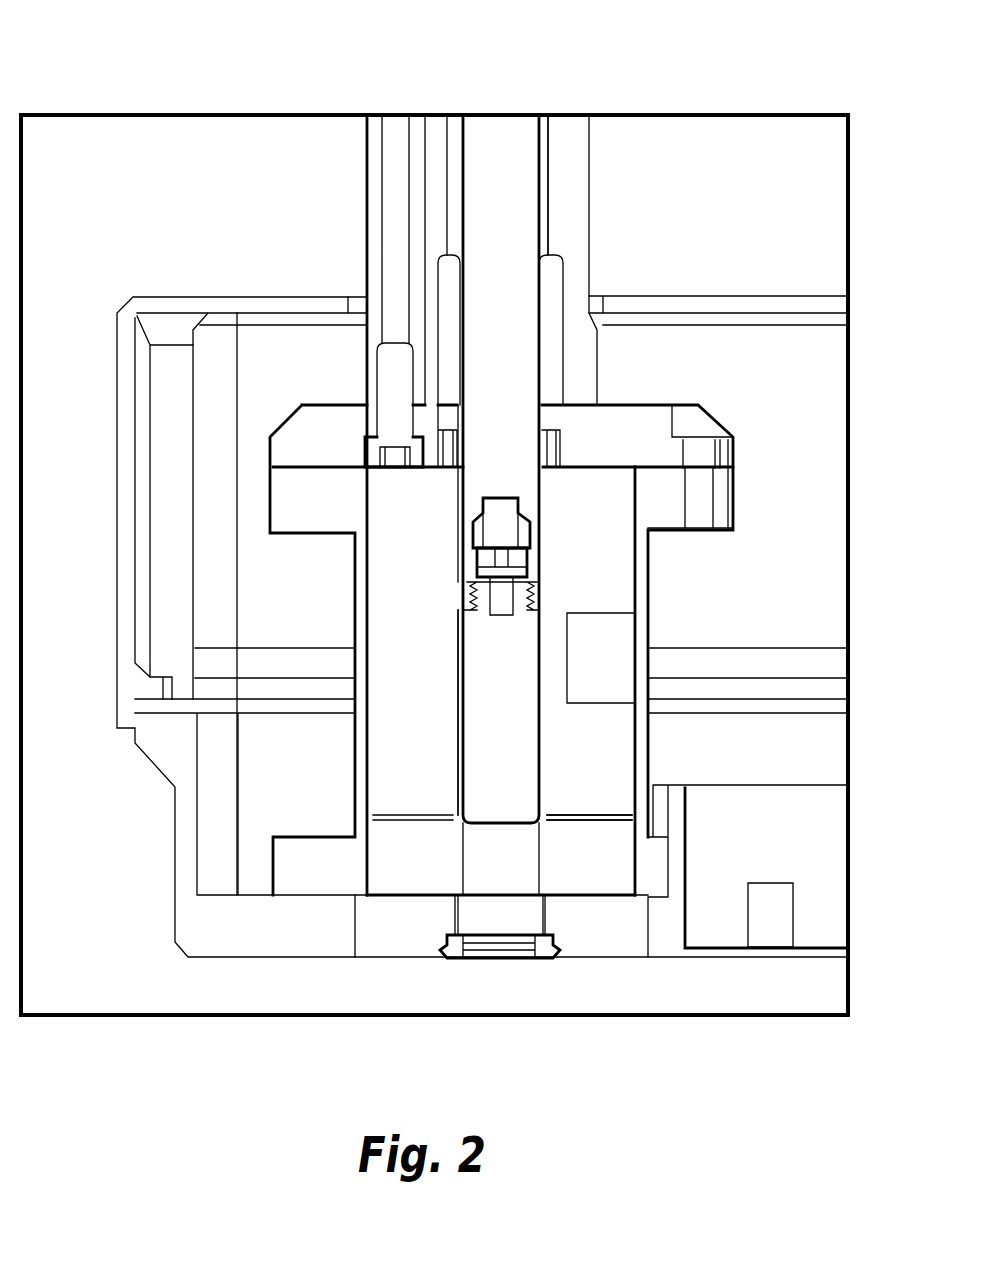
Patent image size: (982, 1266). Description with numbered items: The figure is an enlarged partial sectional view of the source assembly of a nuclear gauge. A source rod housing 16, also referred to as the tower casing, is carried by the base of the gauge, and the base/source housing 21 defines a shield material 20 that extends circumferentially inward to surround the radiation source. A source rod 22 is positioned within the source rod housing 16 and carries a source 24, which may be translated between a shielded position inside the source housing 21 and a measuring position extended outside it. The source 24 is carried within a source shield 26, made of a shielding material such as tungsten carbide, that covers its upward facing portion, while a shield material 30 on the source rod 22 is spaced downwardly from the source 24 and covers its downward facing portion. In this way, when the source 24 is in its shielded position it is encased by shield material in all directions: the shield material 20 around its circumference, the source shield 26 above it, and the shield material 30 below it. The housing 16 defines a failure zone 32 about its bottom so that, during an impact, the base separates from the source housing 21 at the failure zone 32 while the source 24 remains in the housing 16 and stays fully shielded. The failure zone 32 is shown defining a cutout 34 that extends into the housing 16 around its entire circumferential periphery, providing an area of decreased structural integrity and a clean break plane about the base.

The source rod housing 16 is at (556, 222).
The shield material 20 is at (395, 692).
The source housing 21 is at (387, 905).
The source rod 22 is at (510, 205).
The source 24 is at (502, 588).
The source shield 26 is at (476, 556).
The shield material 30 is at (483, 755).
The failure zone 32 is at (780, 608).
The cutout 34 is at (585, 828).